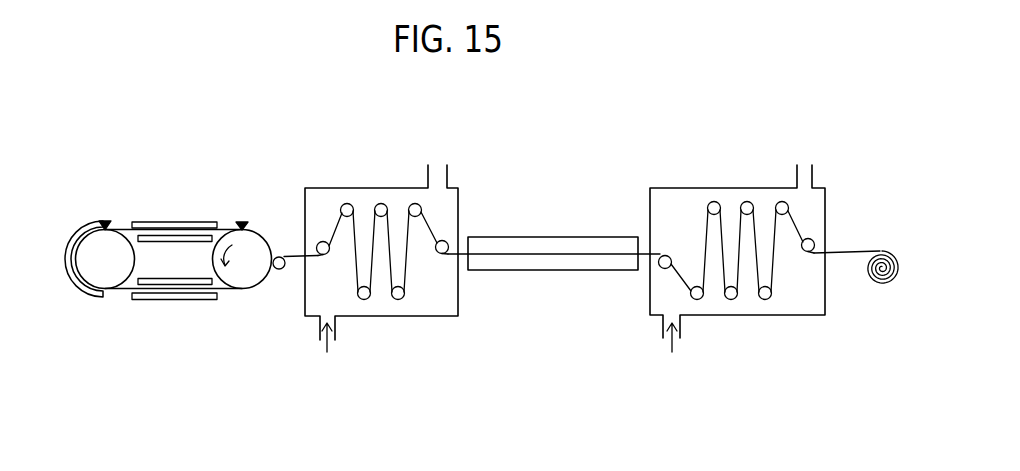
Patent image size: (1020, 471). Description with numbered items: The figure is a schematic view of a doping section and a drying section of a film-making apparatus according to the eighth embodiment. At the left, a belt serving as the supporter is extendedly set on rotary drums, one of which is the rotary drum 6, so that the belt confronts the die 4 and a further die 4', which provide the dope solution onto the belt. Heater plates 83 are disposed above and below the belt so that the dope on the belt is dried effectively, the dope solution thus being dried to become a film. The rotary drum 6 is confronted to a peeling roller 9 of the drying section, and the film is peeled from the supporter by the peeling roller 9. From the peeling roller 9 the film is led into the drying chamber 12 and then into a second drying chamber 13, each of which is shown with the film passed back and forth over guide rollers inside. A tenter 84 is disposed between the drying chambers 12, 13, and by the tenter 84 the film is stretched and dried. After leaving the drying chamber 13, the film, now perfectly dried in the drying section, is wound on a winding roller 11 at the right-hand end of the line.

The die 4 is at (239, 191).
The die 4' is at (106, 189).
The rotary drum 6 is at (265, 233).
The peeling roller 9 is at (278, 271).
The winding roller 11 is at (882, 287).
The drying chamber 12 is at (328, 188).
The drying chamber 13 is at (714, 188).
The heater plates 83 is at (168, 302).
The tenter 84 is at (555, 237).